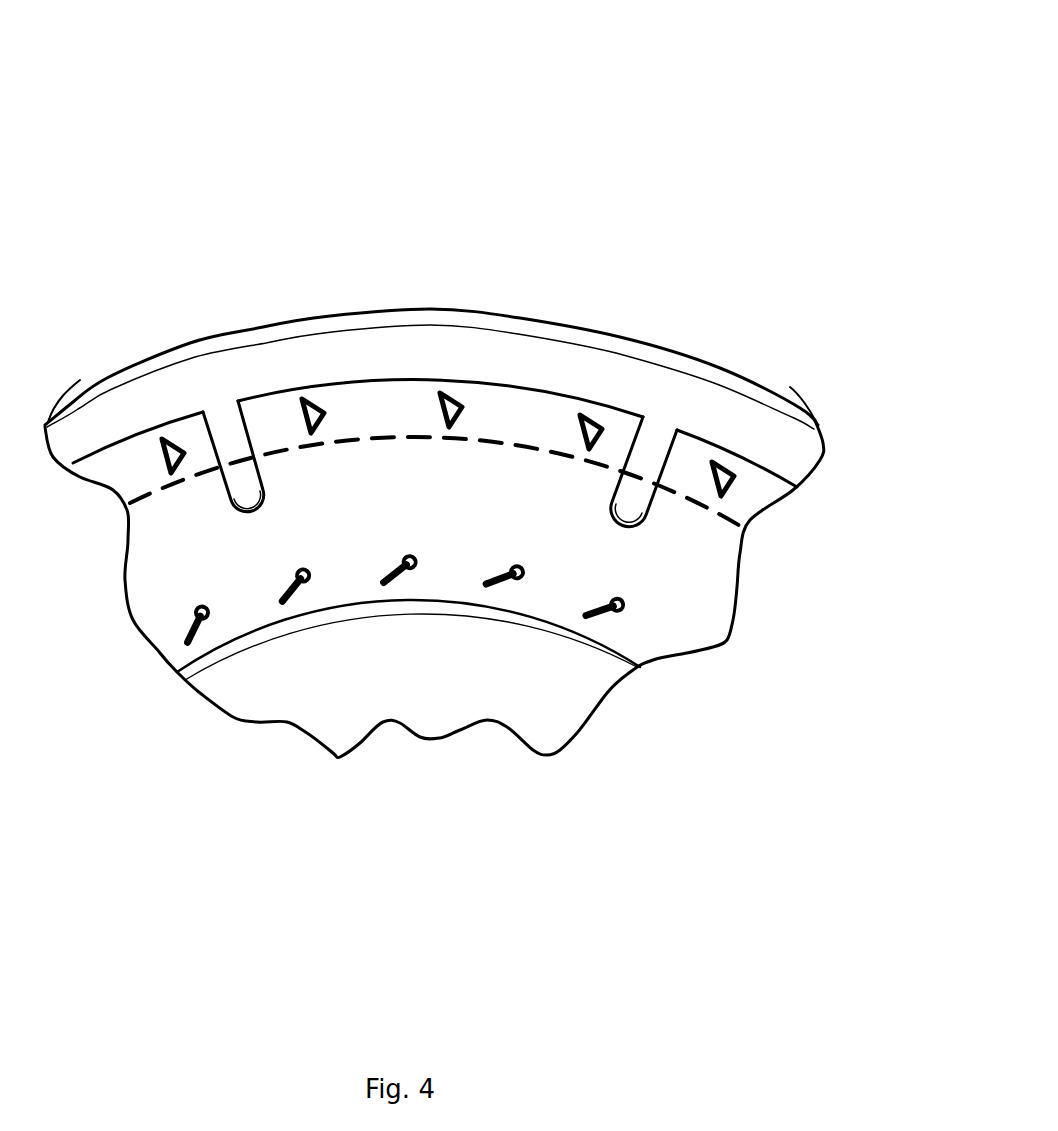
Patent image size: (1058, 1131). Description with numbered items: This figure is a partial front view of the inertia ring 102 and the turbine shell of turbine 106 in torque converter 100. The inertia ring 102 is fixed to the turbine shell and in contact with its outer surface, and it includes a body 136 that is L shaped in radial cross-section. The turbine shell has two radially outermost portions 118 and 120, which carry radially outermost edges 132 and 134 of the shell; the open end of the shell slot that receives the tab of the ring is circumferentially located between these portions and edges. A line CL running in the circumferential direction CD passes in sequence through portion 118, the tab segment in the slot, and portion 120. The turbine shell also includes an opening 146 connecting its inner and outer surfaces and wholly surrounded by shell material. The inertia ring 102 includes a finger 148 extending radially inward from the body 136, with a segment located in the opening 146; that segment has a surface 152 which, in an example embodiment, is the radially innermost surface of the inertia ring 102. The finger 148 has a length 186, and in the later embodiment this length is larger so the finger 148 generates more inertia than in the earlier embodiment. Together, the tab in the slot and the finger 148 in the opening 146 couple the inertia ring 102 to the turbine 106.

The torque converter 100 is at (700, 90).
The inertia ring 102 is at (247, 320).
The turbine 106 is at (730, 642).
The radially outermost portion 118 is at (513, 410).
The radially outermost portion 120 is at (685, 453).
The radially outermost edge 132 is at (577, 398).
The radially outermost edge 134 is at (723, 443).
The body 136 is at (343, 350).
The opening 146 is at (620, 522).
The finger 148 is at (646, 455).
The surface 152 is at (624, 505).
The length 186 is at (268, 558).
The line CL is at (713, 512).
The circumferential direction CD is at (243, 183).